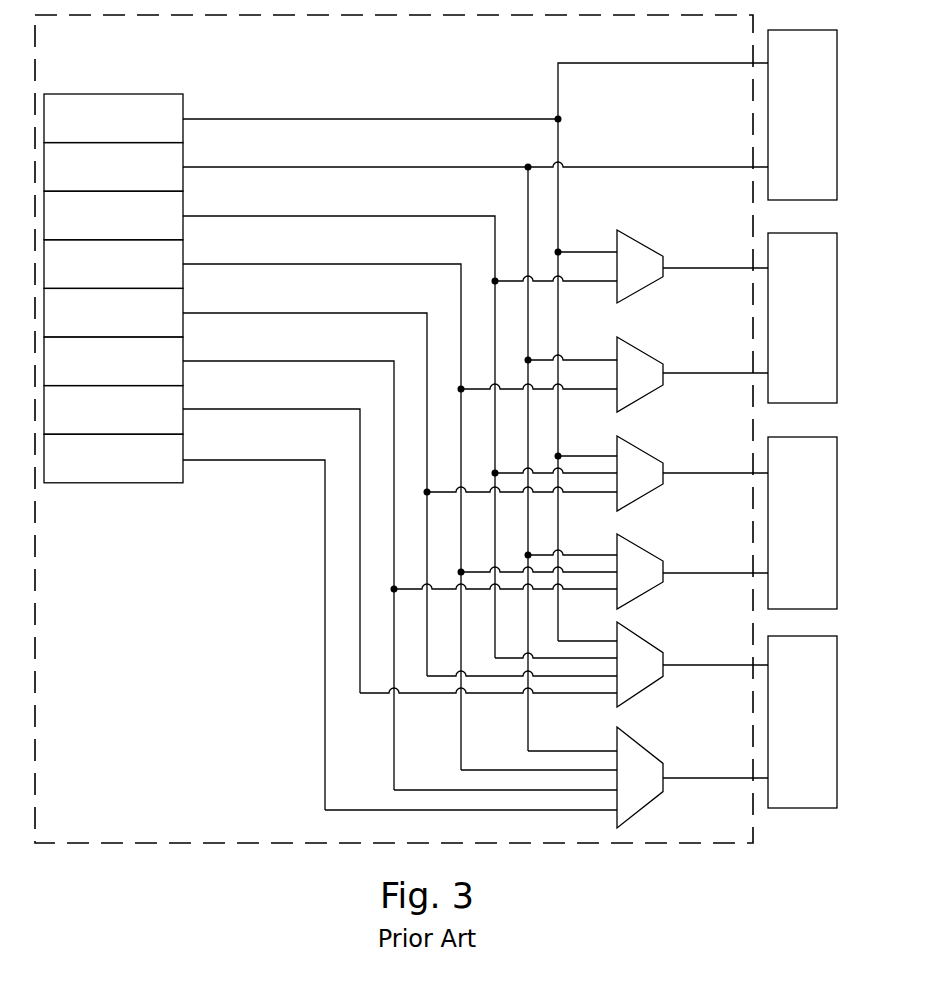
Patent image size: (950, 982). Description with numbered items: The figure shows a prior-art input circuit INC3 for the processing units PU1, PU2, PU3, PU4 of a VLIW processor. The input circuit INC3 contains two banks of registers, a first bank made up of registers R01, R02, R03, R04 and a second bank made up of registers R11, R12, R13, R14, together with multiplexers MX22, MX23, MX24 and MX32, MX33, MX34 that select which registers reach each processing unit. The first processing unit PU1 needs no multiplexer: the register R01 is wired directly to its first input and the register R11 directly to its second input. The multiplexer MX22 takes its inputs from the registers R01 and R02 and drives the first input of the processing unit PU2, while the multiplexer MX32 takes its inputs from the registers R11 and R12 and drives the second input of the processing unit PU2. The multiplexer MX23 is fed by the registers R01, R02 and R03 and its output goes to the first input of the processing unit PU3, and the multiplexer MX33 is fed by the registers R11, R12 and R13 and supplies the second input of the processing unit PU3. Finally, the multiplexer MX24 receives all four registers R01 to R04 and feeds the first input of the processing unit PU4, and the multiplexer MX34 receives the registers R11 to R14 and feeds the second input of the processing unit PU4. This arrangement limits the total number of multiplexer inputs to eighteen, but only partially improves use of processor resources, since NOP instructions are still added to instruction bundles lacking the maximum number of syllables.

The input circuit INC3 is at (342, 69).
The register R01 is at (137, 131).
The register R11 is at (137, 180).
The register R02 is at (137, 228).
The register R12 is at (137, 276).
The register R03 is at (137, 325).
The register R13 is at (137, 374).
The register R04 is at (137, 422).
The register R14 is at (137, 471).
The multiplexer MX22 is at (640, 243).
The multiplexer MX32 is at (640, 349).
The multiplexer MX23 is at (646, 448).
The multiplexer MX33 is at (647, 594).
The multiplexer MX24 is at (646, 639).
The multiplexer MX34 is at (646, 746).
The processing unit PU1 is at (782, 122).
The processing unit PU2 is at (782, 328).
The processing unit PU3 is at (782, 531).
The processing unit PU4 is at (782, 731).